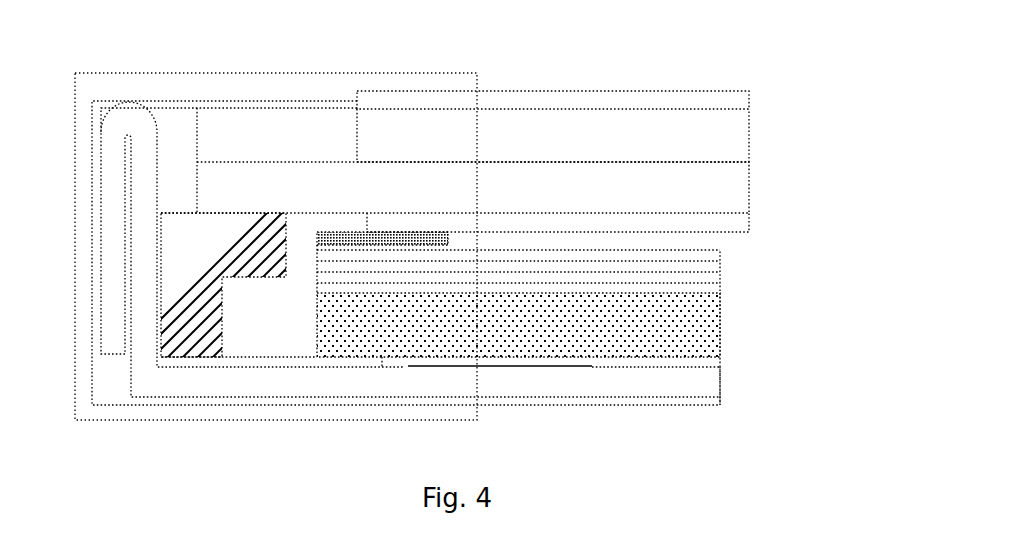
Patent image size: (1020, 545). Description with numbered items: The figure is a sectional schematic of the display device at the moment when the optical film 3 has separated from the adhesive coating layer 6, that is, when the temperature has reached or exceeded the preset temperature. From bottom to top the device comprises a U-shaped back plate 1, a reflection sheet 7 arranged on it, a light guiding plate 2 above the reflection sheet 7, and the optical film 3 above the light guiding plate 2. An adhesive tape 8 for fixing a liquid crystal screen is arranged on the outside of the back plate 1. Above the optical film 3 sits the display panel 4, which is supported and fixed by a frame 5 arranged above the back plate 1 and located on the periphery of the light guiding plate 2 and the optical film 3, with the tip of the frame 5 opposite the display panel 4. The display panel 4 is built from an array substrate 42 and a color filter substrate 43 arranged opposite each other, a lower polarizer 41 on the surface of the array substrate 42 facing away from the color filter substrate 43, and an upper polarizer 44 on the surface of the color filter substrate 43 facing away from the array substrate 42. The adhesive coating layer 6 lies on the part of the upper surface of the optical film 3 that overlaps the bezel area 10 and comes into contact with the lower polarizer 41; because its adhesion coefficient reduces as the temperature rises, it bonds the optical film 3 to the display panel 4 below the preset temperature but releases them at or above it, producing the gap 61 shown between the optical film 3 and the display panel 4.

The bezel area 10 is at (333, 73).
The frame 5 is at (163, 338).
The display panel 4 is at (525, 150).
The upper polarizer 44 is at (730, 102).
The color filter substrate 43 is at (737, 142).
The array substrate 42 is at (740, 199).
The lower polarizer 41 is at (595, 214).
The adhesive coating layer 6 is at (448, 232).
The gap 61 is at (720, 250).
The optical film 3 is at (705, 290).
The light guiding plate 2 is at (720, 330).
The reflection sheet 7 is at (713, 363).
The back plate 1 is at (713, 382).
The adhesive tape 8 is at (720, 402).